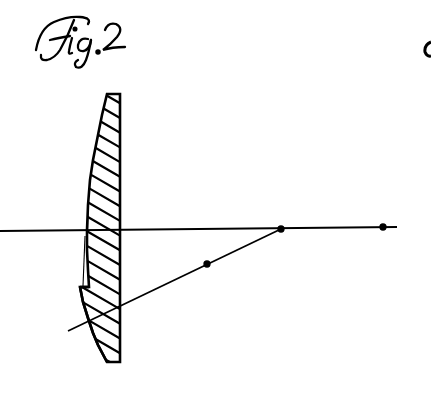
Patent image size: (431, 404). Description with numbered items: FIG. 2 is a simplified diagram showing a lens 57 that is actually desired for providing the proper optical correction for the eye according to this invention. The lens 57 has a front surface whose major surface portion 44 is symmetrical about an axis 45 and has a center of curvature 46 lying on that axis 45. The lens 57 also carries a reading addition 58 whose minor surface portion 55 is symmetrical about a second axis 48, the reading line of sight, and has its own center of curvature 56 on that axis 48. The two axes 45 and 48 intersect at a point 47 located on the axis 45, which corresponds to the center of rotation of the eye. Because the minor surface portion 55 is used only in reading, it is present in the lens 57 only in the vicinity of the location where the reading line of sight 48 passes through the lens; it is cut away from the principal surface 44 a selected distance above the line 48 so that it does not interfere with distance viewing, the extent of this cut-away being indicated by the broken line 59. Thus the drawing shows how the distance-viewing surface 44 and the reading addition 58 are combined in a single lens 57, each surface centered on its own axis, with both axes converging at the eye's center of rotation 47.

The major surface portion 44 is at (100, 128).
The axis 45 is at (193, 229).
The center of curvature 46 is at (411, 205).
The point 47 is at (283, 229).
The axis 48 is at (176, 274).
The minor surface portion 55 is at (92, 332).
The center of curvature 56 is at (208, 266).
The lens 57 is at (80, 204).
The reading addition 58 is at (80, 295).
The broken line 59 is at (78, 265).